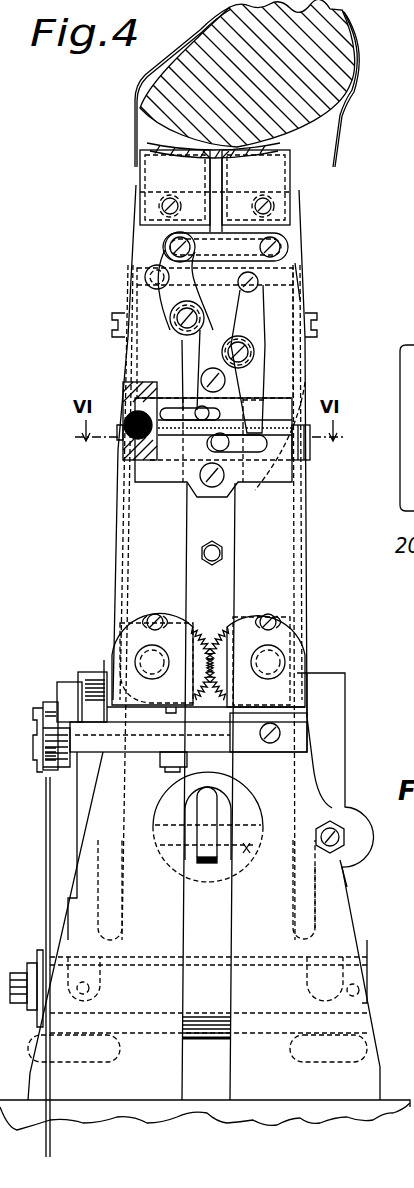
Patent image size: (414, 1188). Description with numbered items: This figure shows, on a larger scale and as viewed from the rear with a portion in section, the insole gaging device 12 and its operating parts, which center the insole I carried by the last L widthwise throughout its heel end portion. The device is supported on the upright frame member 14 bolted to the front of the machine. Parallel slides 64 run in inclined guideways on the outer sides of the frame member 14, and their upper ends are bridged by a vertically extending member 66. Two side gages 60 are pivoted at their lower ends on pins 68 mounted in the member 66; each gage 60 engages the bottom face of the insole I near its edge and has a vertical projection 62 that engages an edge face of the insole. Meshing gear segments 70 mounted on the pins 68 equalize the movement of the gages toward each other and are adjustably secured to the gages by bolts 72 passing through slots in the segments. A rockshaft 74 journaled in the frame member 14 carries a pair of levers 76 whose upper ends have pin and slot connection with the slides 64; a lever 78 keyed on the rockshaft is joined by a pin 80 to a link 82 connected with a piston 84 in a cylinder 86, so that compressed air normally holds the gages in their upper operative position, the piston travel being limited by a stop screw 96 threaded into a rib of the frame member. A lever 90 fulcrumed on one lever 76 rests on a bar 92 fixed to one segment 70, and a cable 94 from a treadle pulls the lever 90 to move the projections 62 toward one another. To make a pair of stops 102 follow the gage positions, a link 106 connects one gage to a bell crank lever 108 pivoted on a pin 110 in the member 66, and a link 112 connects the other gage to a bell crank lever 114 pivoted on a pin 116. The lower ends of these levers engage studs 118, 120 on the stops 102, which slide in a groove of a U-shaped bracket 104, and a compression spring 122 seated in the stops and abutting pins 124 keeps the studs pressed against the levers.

The last L is at (340, 32).
The insole I is at (137, 110).
The vertical projection 62 is at (147, 143).
The insole gaging device 12 is at (318, 235).
The link 106 is at (290, 250).
The vertically extending member 66 is at (298, 268).
The bell crank lever 108 is at (163, 255).
The link 112 is at (148, 275).
The pin 110 is at (176, 312).
The bell crank lever 114 is at (268, 310).
The pin 116 is at (252, 352).
The stud 118 is at (200, 410).
The compression spring 122 is at (292, 393).
The U-shaped bracket 104 is at (283, 483).
The stops 102 is at (123, 400).
The pins 124 is at (120, 438).
The stud 120 is at (223, 435).
The slides 64 is at (127, 523).
The side gages 60 is at (117, 547).
The gear segments 70 is at (158, 603).
The bolts 72 is at (150, 618).
The pins 68 is at (138, 660).
The lever 90 is at (67, 690).
The bar 92 is at (143, 750).
The cylinder 86 is at (260, 793).
The piston 84 is at (232, 790).
The link 82 is at (213, 850).
The pin 80 is at (247, 845).
The levers 76 is at (80, 837).
The stop screw 96 is at (342, 813).
The upright frame member 14 is at (350, 920).
The cable 94 is at (46, 820).
The lever 78 is at (227, 923).
The rockshaft 74 is at (370, 983).